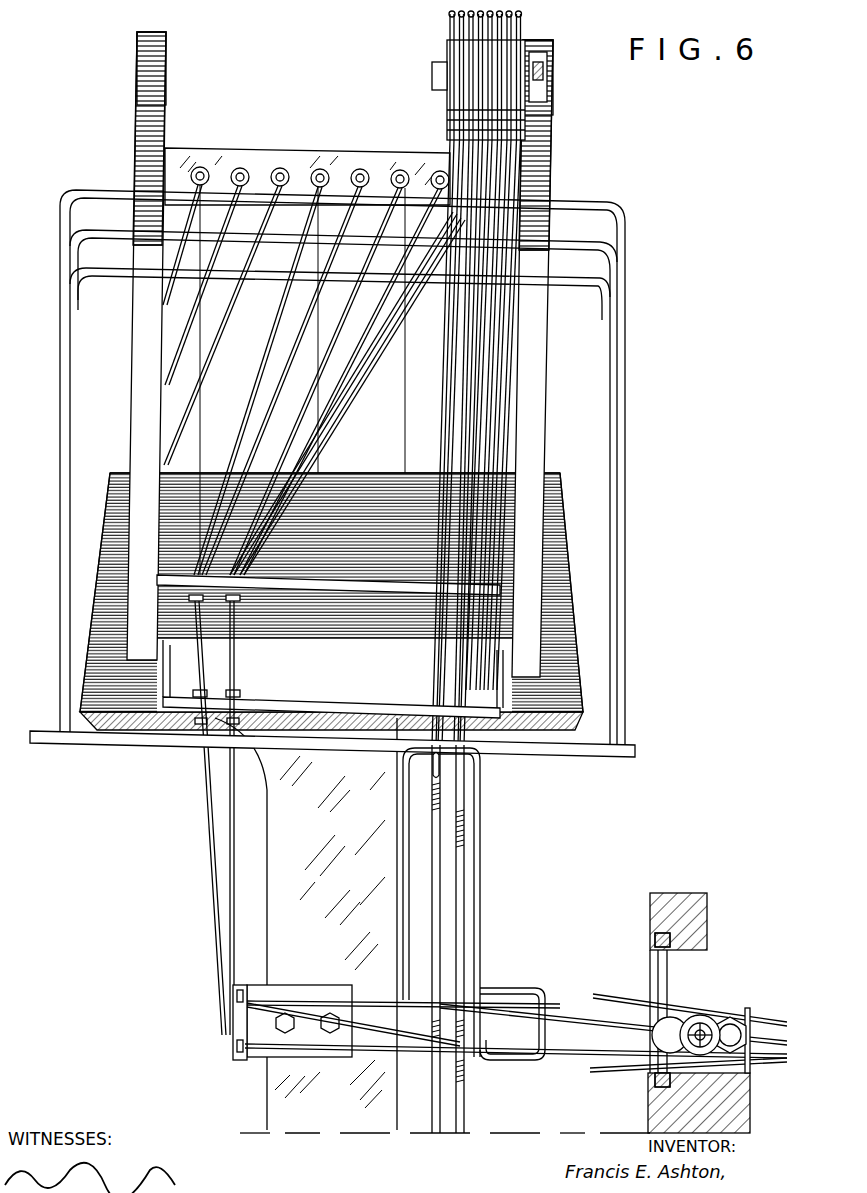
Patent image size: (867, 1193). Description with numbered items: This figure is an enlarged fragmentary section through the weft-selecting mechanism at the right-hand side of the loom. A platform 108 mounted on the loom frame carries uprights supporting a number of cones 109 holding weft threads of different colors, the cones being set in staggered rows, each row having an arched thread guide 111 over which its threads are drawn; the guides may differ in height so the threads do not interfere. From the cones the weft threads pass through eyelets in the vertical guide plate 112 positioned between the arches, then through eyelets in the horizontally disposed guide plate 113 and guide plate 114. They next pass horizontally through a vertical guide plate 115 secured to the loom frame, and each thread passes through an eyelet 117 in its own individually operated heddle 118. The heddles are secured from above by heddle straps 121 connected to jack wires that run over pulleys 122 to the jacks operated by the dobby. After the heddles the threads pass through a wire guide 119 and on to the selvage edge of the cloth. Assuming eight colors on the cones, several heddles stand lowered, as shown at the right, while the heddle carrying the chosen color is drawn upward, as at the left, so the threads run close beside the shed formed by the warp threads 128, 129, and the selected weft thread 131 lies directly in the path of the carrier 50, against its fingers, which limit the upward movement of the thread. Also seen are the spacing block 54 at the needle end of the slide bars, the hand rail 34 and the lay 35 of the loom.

The hand rail 34 is at (699, 927).
The lay 35 is at (750, 1131).
The carrier 50 is at (701, 1015).
The spacing block 54 is at (731, 1013).
The platform 108 is at (588, 752).
The cones 109 is at (560, 482).
The arched thread guide 111 is at (553, 245).
The guide plate 112 is at (290, 157).
The guide plate 113 is at (281, 581).
The guide plate 114 is at (247, 703).
The vertical guide plate 115 is at (243, 988).
The eyelet 117 is at (436, 1003).
The heddle 118 is at (437, 893).
The wire guide 119 is at (498, 990).
The heddle straps 121 is at (450, 319).
The pulleys 122 is at (447, 38).
The warp threads 128 is at (757, 1022).
The warp threads 129 is at (772, 1058).
The selected weft thread 131 is at (558, 1017).